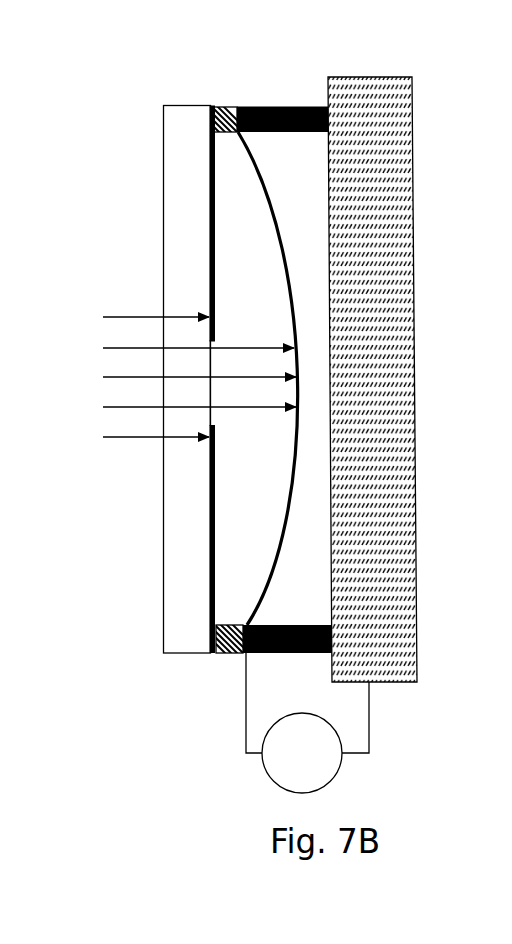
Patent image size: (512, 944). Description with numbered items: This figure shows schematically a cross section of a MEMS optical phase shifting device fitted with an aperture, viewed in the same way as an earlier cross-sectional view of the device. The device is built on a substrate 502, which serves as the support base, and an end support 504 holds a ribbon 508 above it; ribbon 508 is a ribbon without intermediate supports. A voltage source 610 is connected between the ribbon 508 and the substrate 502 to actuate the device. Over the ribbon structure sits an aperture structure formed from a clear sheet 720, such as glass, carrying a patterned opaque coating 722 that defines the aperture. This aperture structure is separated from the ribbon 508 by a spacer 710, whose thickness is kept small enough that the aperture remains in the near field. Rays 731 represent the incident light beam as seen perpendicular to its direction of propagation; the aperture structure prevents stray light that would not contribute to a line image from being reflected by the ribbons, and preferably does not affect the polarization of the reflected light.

The substrate 502 is at (398, 118).
The end support 504 is at (277, 106).
The ribbon 508 is at (238, 106).
The spacer 710 is at (223, 106).
The clear sheet 720 is at (164, 106).
The opaque coating 722 is at (210, 106).
The rays 731 is at (83, 347).
The voltage source 610 is at (355, 775).